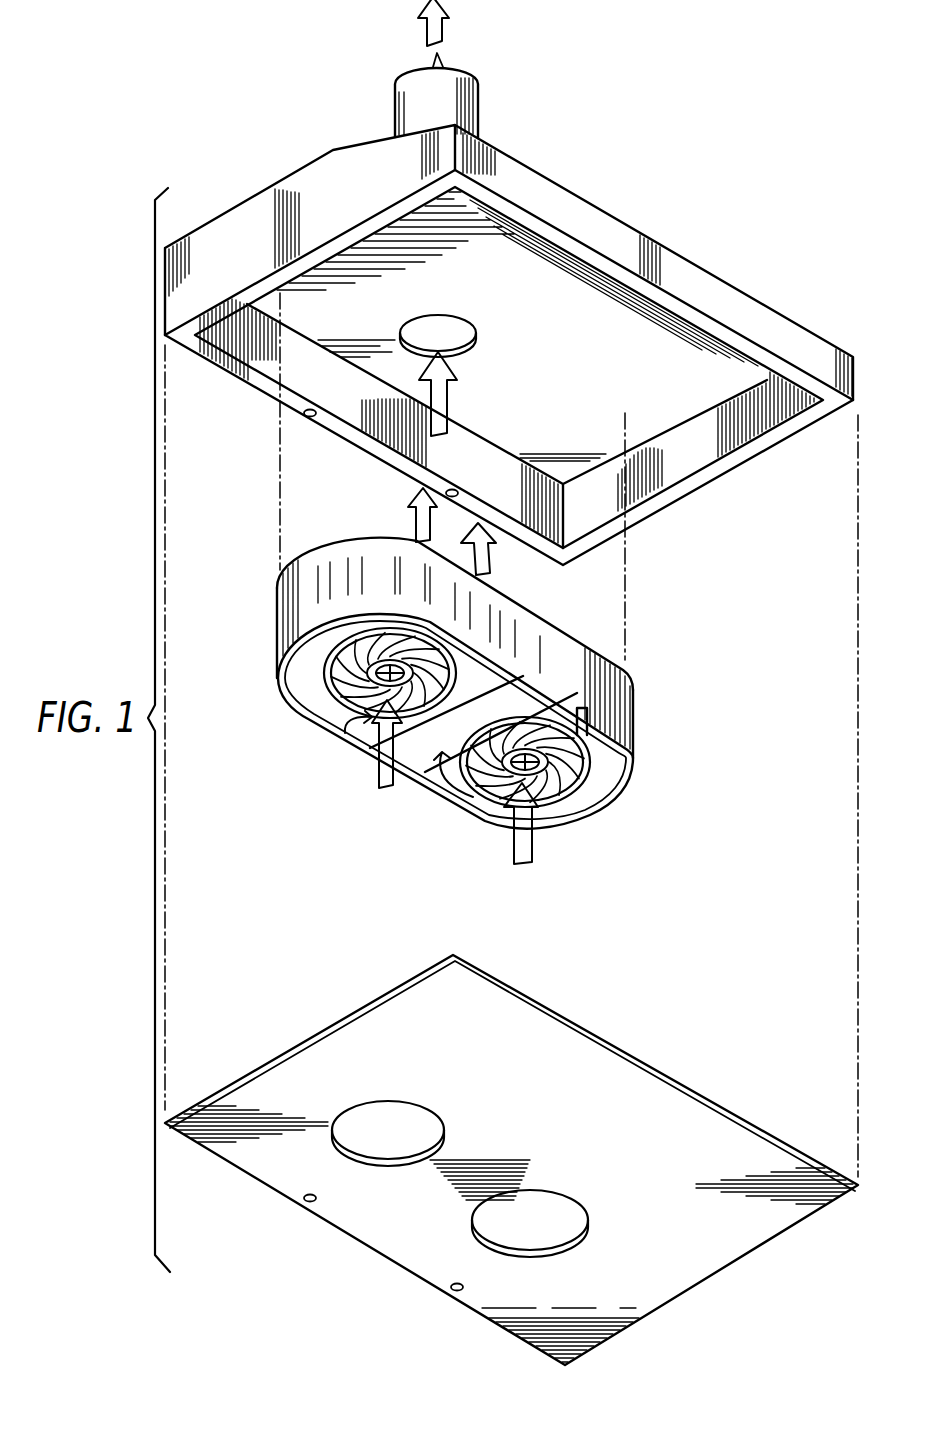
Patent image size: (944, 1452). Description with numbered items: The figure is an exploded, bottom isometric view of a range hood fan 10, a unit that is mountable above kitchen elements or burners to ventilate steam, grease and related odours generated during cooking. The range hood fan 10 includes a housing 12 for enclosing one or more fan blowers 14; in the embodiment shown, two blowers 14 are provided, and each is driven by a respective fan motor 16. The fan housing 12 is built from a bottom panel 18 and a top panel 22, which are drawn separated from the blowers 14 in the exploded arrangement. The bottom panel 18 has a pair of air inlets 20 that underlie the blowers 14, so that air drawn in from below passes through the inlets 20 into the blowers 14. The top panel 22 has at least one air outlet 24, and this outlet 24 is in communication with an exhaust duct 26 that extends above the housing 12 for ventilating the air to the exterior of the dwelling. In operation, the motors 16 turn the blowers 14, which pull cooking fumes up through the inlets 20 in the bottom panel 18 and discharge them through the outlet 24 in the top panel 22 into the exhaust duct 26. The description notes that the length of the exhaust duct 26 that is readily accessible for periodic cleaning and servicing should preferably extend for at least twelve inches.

The range hood fan 10 is at (716, 223).
The housing 12 is at (615, 686).
The fan blower 14 is at (337, 620).
The fan motor 16 is at (347, 697).
The bottom panel 18 is at (620, 1085).
The air inlet 20 is at (395, 1120).
The top panel 22 is at (565, 210).
The air outlet 24 is at (462, 344).
The exhaust duct 26 is at (465, 106).